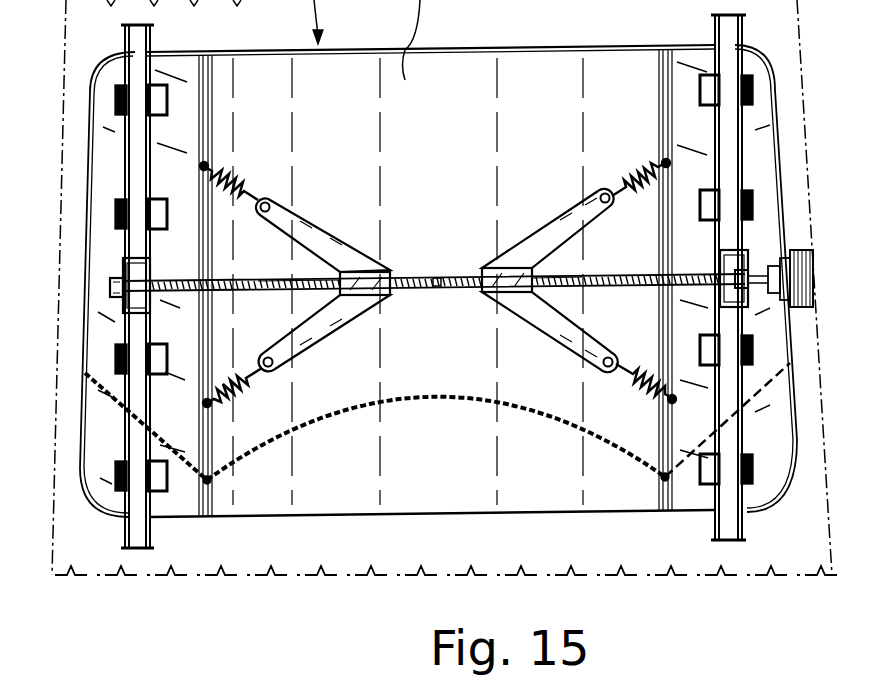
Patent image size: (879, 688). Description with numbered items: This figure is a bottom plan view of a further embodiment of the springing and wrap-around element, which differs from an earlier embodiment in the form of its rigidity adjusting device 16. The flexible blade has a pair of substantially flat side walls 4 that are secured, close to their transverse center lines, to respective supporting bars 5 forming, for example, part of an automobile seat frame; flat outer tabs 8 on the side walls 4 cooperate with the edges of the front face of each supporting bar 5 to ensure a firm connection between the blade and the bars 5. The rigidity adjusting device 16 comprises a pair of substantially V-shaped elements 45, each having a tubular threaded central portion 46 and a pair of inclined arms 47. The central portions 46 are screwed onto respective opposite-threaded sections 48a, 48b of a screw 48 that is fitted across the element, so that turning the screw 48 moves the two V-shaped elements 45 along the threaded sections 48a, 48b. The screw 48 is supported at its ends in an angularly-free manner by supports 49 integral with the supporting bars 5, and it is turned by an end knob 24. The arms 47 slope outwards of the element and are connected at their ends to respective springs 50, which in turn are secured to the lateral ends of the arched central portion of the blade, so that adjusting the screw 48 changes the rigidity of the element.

The side walls 4 is at (108, 165).
The supporting bars 5 is at (130, 433).
The flat outer tabs 8 is at (116, 100).
The rigidity adjusting device 16 is at (580, 378).
The end knob 24 is at (813, 288).
The V-shaped elements 45 is at (345, 337).
The tubular threaded central portion 46 is at (378, 268).
The inclined arms 47 is at (305, 230).
The screw 48 is at (438, 274).
The opposite-threaded section 48a is at (258, 280).
The opposite-threaded section 48b is at (581, 270).
The supports 49 is at (124, 276).
The springs 50 is at (226, 165).